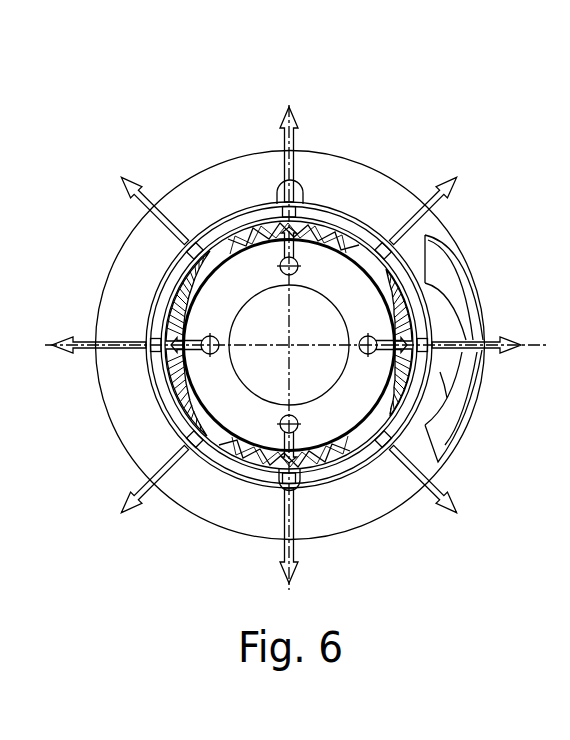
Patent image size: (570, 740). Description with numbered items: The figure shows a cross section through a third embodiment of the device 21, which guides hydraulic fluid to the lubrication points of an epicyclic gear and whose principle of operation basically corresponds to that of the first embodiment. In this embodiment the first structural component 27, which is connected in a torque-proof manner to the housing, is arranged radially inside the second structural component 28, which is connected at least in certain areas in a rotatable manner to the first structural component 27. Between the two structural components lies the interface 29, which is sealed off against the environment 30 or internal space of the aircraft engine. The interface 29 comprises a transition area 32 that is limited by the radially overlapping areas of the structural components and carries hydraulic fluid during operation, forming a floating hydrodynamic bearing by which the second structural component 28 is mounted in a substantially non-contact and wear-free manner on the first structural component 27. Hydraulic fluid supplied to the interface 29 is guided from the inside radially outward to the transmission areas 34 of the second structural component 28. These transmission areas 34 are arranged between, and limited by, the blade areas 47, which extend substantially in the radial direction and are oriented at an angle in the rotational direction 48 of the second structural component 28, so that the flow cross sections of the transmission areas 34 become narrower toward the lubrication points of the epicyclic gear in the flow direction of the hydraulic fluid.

The device 21 is at (205, 123).
The first structural component 27 is at (258, 305).
The second structural component 28 is at (251, 198).
The interface 29 is at (283, 447).
The environment 30 is at (377, 158).
The transition area 32 is at (298, 460).
The transmission areas 34 is at (177, 325).
The blade areas 47 is at (150, 368).
The rotational direction 48 is at (435, 255).